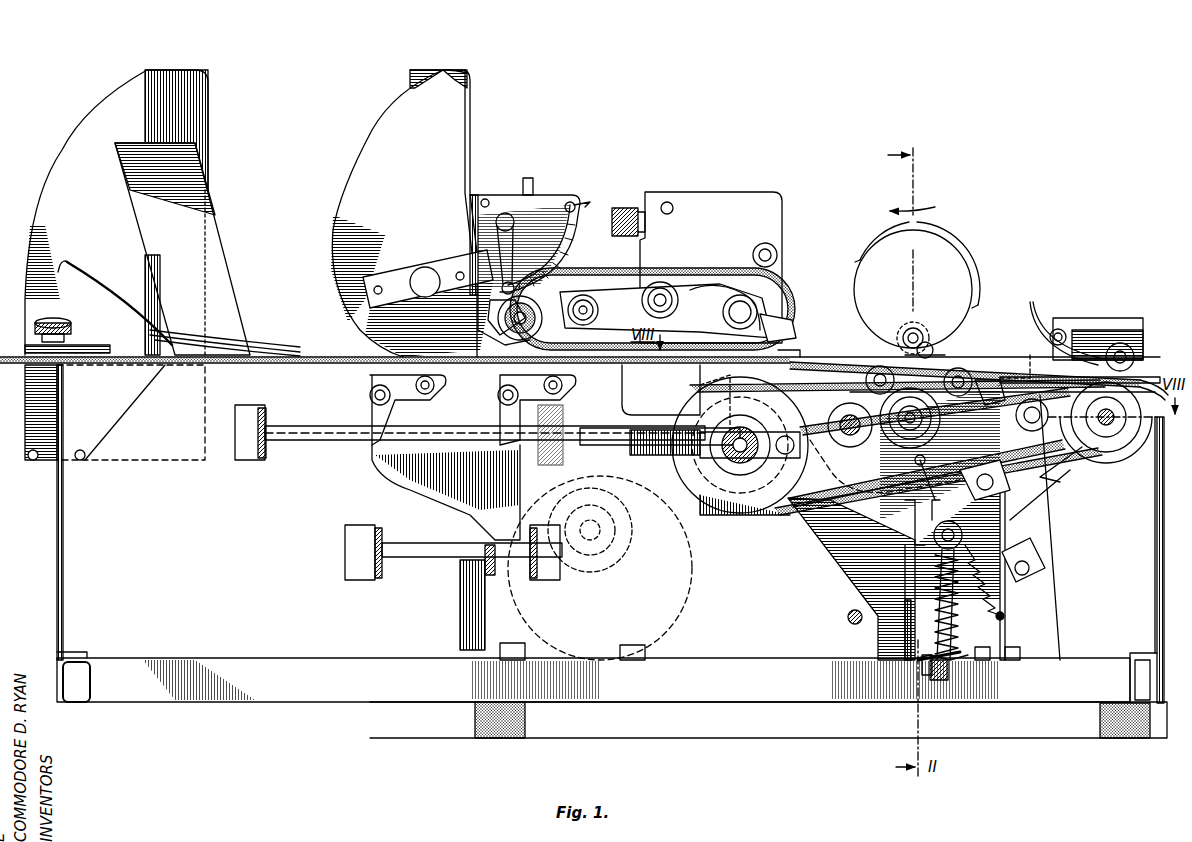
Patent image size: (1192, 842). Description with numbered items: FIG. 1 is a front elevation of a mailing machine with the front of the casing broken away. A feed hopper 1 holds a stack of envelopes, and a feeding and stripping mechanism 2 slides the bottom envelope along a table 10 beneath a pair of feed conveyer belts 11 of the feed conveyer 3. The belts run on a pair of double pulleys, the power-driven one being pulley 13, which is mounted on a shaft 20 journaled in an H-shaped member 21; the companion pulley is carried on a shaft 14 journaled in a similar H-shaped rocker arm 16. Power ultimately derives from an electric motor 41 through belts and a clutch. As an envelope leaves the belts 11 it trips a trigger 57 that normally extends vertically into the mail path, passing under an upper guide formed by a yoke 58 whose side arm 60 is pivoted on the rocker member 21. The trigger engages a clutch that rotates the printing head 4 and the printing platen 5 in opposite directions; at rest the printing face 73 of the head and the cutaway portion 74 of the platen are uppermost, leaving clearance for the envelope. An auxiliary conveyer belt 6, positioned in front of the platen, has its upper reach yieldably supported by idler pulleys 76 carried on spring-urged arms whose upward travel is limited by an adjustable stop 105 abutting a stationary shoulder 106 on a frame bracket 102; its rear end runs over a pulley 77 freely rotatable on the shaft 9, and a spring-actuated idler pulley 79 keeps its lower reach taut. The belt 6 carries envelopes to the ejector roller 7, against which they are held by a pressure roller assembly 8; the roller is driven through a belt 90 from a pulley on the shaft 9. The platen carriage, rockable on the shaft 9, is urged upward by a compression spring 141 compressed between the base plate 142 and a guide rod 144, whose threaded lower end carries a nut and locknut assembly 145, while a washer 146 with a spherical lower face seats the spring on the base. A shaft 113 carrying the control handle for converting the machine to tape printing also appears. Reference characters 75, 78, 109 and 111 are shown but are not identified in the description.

The feed hopper 1 is at (258, 248).
The feeding and stripping mechanism 2 is at (508, 185).
The feed conveyer 3 is at (716, 192).
The printing head 4 is at (950, 236).
The printing platen 5 is at (870, 455).
The auxiliary conveyer belt 6 is at (1080, 465).
The ejector roller 7 is at (1126, 456).
The pressure roller assembly 8 is at (1100, 345).
The shaft 9 is at (728, 513).
The table 10 is at (638, 365).
The feed conveyer belts 11 is at (683, 272).
The double pulley 13 is at (772, 287).
The shaft 14 is at (586, 306).
The H-shaped rocker arm 16 is at (630, 293).
The shaft 20 is at (752, 316).
The H-shaped member 21 is at (727, 295).
The electric motor 41 is at (685, 594).
The trigger 57 is at (730, 384).
The yoke 58 is at (793, 350).
The side arm 60 is at (788, 330).
The printing face 73 is at (958, 250).
The cutaway portion 74 is at (925, 345).
The guide wire 75 is at (297, 348).
The idler pulleys 76 is at (865, 378).
The pulley 77 is at (773, 503).
The lower belt run 78 is at (1102, 460).
The idler pulley 79 is at (945, 550).
The driving belt 90 is at (1058, 482).
The frame bracket 102 is at (828, 528).
The adjustable stop 105 is at (988, 375).
The stationary shoulder 106 is at (820, 368).
The transfer roller 109 is at (902, 330).
The block 111 is at (636, 430).
The shaft 113 is at (848, 614).
The compression spring 141 is at (962, 592).
The base plate 142 is at (958, 660).
The guide rod 144 is at (920, 627).
The nut and locknut assembly 145 is at (948, 680).
The washer 146 is at (915, 680).